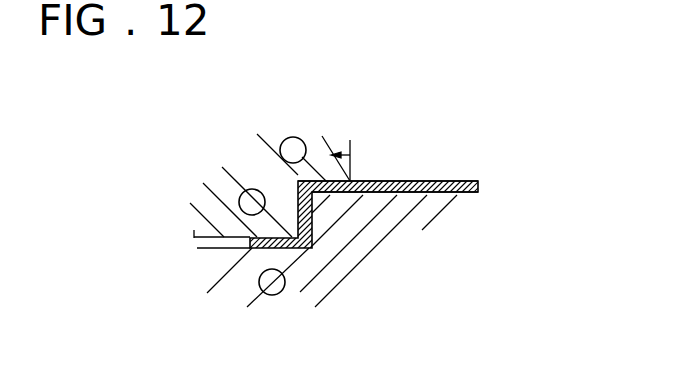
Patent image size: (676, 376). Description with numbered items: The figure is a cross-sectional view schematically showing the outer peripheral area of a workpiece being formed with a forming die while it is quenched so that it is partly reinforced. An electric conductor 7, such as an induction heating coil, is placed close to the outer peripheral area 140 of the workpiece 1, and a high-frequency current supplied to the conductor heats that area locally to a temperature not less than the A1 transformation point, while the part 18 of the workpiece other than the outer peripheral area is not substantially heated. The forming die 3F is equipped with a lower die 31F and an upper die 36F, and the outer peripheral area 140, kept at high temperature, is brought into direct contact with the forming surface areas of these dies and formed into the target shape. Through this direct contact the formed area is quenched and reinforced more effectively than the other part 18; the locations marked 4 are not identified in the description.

The workpiece 1 is at (474, 203).
The forming die 3F is at (190, 222).
The adhesive / fastening points 4 is at (294, 150).
The electric conductor 7 is at (305, 210).
The part of the workpiece other than the outer peripheral area 18 is at (470, 182).
The lower die 31F is at (344, 255).
The upper die 36F is at (352, 155).
The outer peripheral area 140 is at (260, 244).